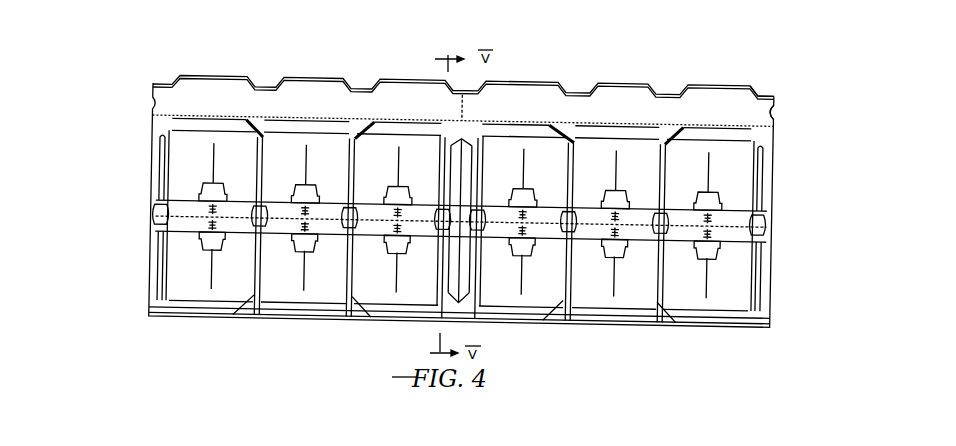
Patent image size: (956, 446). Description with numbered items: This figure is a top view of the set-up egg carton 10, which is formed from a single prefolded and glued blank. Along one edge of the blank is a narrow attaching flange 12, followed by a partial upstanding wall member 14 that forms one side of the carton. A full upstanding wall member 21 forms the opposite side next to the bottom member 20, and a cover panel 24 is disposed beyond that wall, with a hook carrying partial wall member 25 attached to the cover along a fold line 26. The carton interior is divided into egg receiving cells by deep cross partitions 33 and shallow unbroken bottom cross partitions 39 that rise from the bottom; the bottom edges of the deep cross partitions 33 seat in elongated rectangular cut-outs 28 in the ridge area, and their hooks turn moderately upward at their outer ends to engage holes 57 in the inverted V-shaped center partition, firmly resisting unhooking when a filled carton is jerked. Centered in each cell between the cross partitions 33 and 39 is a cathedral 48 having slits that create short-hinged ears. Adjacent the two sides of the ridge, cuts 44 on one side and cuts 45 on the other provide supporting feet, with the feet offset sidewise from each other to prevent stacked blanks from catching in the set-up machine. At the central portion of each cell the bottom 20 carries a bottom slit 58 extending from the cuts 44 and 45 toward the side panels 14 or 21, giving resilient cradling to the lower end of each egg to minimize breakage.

The egg carton 10 is at (139, 56).
The attaching flange 12 is at (620, 124).
The partial upstanding wall member 14 is at (730, 322).
The bottom member 20 is at (372, 294).
The full upstanding wall member 21 is at (699, 136).
The cover panel 24 is at (776, 113).
The hook carrying partial wall member 25 is at (722, 88).
The web 26 is at (738, 104).
The cut-outs 28 is at (154, 212).
The deep cross partition 33 is at (157, 242).
The shallow bottom cross partition 39 is at (571, 170).
The cuts 44 is at (219, 250).
The cuts 45 is at (205, 182).
The cathedral 48 is at (606, 238).
The holes 57 is at (161, 165).
The bottom slit 58 is at (216, 149).